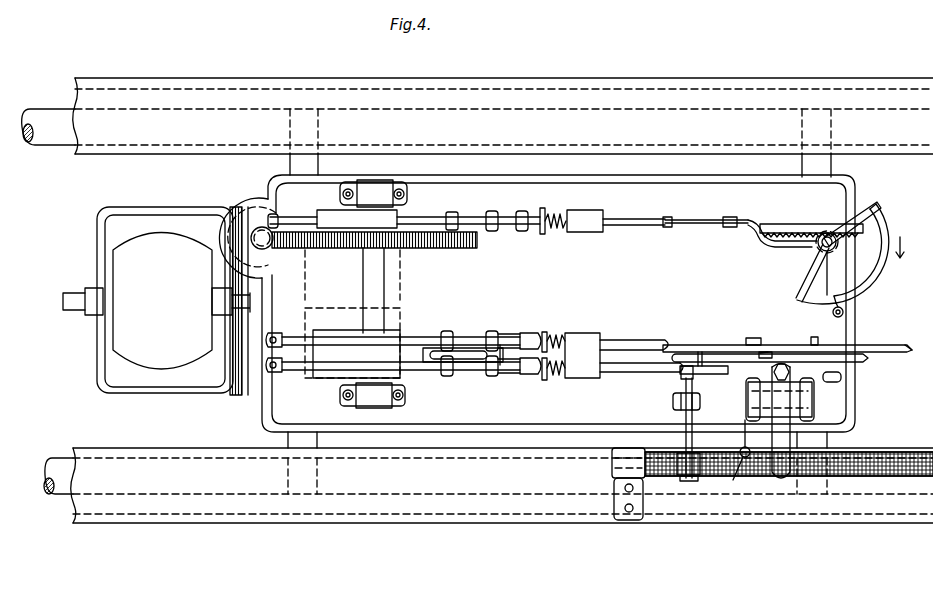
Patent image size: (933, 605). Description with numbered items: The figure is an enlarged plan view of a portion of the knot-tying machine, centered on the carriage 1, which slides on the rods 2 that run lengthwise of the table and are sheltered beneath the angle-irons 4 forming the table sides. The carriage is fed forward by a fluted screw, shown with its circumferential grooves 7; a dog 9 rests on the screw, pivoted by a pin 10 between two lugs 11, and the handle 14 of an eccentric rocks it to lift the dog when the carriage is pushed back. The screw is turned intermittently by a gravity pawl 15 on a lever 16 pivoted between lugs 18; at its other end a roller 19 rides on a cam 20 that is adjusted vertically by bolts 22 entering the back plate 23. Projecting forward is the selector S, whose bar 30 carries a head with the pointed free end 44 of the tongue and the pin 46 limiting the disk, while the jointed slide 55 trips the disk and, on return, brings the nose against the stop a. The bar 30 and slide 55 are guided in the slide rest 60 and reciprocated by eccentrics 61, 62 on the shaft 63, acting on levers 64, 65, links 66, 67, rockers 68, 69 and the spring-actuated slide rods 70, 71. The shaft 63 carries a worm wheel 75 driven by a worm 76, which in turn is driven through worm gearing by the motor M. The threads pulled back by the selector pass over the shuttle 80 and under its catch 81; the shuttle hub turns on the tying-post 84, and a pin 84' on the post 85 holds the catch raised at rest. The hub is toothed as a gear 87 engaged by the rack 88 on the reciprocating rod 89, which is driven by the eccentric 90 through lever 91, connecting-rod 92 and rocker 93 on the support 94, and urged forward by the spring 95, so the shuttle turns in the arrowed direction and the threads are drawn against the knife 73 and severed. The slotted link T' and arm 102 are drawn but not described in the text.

The carriage 1 is at (537, 303).
The rods 2 is at (52, 137).
The angle-irons 4 is at (445, 523).
The circumferential grooves 7 is at (881, 454).
The dog 9 is at (784, 473).
The pin 10 is at (812, 395).
The lugs 11 is at (748, 390).
The handle 14 is at (742, 476).
The gravity pawl 15 is at (688, 481).
The lever 16 is at (692, 436).
The lugs 18 is at (673, 402).
The roller 19 is at (678, 368).
The cam 20 is at (728, 370).
The bolts 22 is at (682, 378).
The back plate 23 is at (700, 352).
The bar 30 is at (776, 345).
The free forward end 44 is at (900, 352).
The pin 46 is at (815, 337).
The jointed slide 55 is at (783, 352).
The slide rest 60 is at (750, 338).
The rotary eccentric 61 is at (342, 332).
The rotary eccentric 62 is at (345, 380).
The shaft 63 is at (366, 268).
The lever 64 is at (288, 333).
The lever 65 is at (283, 372).
The link 66 is at (440, 336).
The link 67 is at (428, 371).
The rocker 68 is at (490, 335).
The rocker 69 is at (480, 373).
The slide rod 70 is at (660, 340).
The slide rod 71 is at (620, 362).
The knife 73 is at (843, 378).
The worm wheel 75 is at (455, 250).
The worm 76 is at (258, 232).
The shuttle 80 is at (892, 276).
The catch 81 is at (796, 300).
The tying-post 84 is at (839, 239).
The pin 84' is at (834, 273).
The post 85 is at (844, 312).
The gear 87 is at (818, 246).
The rack 88 is at (800, 225).
The reciprocating rod 89 is at (630, 218).
The eccentric 90 is at (345, 210).
The lever 91 is at (292, 213).
The connecting-rod 92 is at (450, 213).
The rocker 93 is at (492, 211).
The support 94 is at (522, 231).
The spring 95 is at (552, 214).
The arm 102 is at (775, 242).
The motor M is at (156, 301).
The selector S is at (919, 344).
The slotted link T' is at (457, 335).
The stop a is at (762, 337).